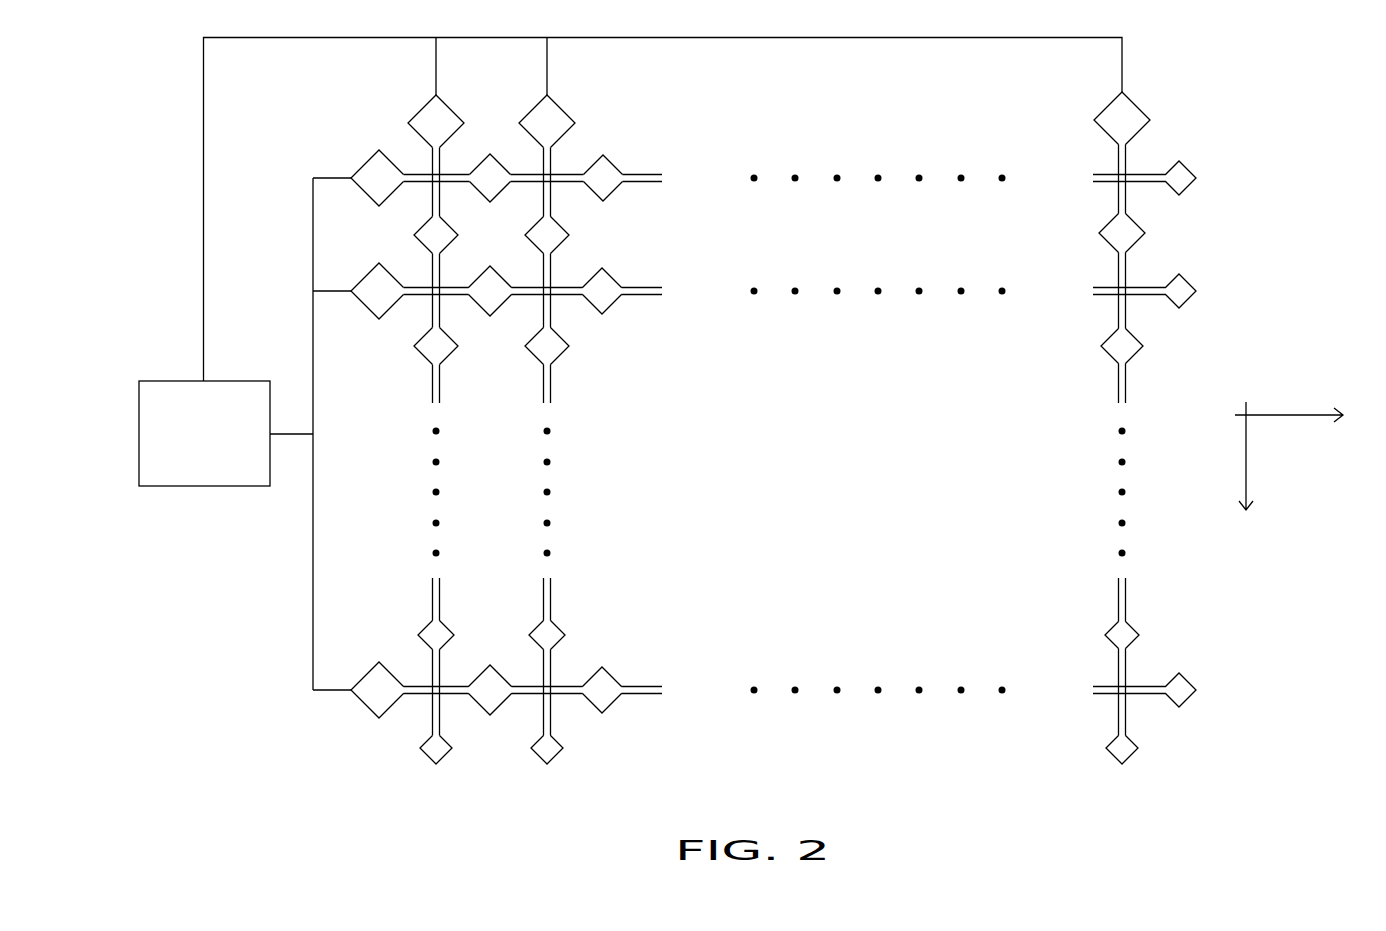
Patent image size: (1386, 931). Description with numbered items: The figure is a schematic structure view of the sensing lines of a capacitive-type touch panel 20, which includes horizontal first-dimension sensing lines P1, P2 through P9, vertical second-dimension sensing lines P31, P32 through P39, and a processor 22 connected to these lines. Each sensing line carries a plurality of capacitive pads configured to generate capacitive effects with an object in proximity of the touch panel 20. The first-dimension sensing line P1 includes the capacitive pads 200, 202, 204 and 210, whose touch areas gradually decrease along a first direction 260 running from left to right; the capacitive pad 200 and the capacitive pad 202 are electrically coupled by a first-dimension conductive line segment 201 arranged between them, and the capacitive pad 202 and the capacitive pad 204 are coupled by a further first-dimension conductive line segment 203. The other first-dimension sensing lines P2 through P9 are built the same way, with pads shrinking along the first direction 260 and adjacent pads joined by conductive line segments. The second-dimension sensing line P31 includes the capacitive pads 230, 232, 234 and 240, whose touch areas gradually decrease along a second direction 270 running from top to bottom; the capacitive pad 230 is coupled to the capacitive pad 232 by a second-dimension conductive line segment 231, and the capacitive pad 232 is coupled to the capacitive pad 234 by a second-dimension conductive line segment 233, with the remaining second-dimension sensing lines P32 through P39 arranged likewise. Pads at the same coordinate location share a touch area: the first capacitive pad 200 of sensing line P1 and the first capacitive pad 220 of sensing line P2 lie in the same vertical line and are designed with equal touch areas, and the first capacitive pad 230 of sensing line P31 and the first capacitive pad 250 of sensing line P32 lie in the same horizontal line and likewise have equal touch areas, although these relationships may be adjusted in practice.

The capacitive-type touch panel 20 is at (1310, 643).
The processor 22 is at (223, 470).
The capacitive pad 200 is at (360, 168).
The first-dimension conductive line segment 201 is at (452, 176).
The capacitive pad 202 is at (485, 191).
The first-dimension conductive line segment 203 is at (574, 176).
The capacitive pad 204 is at (594, 189).
The capacitive pad 210 is at (1189, 175).
The capacitive pad 220 is at (377, 309).
The capacitive pad 230 is at (451, 110).
The second-dimension conductive line segment 231 is at (431, 157).
The capacitive pad 232 is at (428, 218).
The second-dimension conductive line segment 233 is at (436, 311).
The capacitive pad 234 is at (430, 353).
The capacitive pad 240 is at (432, 757).
The capacitive pad 250 is at (563, 110).
The first direction 260 is at (1305, 412).
The second direction 270 is at (1250, 472).
The first-dimension sensing line P1 is at (367, 165).
The first-dimension sensing line P2 is at (366, 274).
The first-dimension sensing line P9 is at (373, 662).
The second-dimension sensing line P31 is at (425, 104).
The second-dimension sensing line P32 is at (537, 104).
The second-dimension sensing line P39 is at (1113, 104).